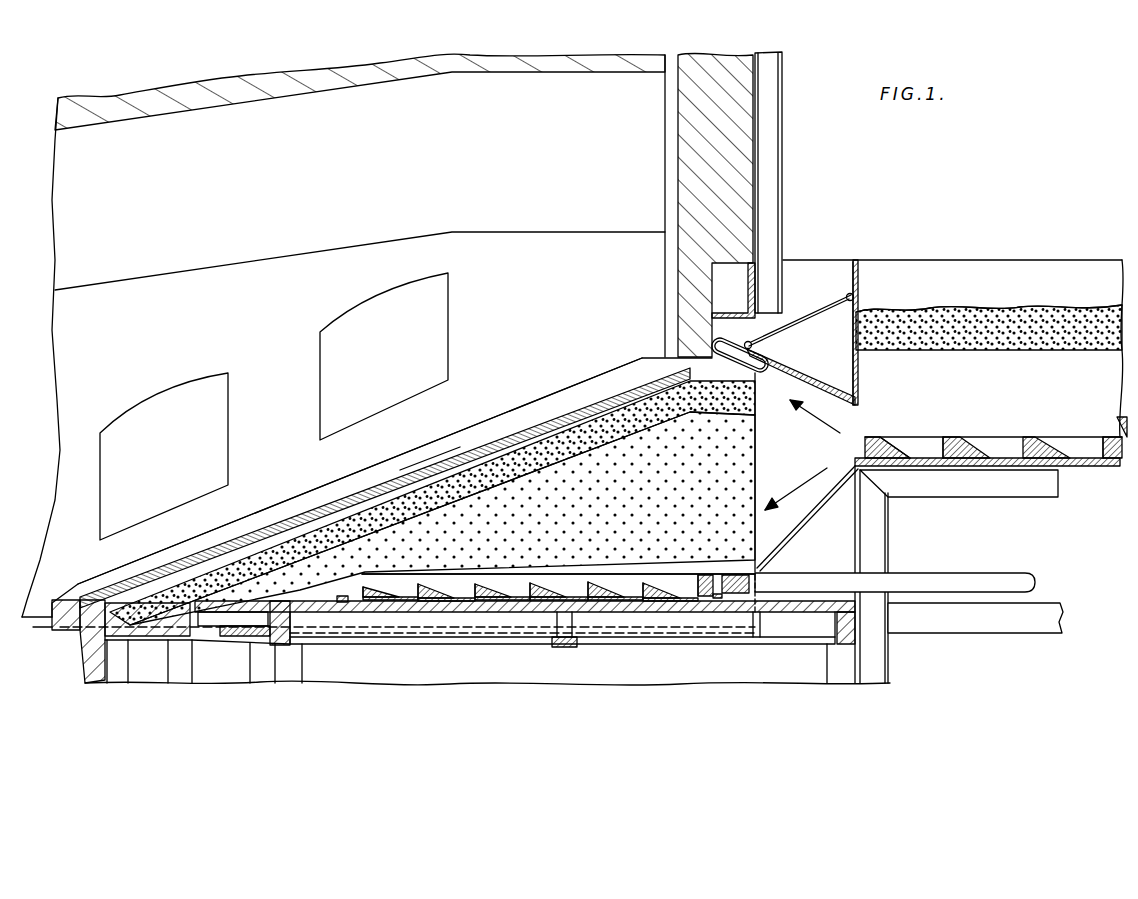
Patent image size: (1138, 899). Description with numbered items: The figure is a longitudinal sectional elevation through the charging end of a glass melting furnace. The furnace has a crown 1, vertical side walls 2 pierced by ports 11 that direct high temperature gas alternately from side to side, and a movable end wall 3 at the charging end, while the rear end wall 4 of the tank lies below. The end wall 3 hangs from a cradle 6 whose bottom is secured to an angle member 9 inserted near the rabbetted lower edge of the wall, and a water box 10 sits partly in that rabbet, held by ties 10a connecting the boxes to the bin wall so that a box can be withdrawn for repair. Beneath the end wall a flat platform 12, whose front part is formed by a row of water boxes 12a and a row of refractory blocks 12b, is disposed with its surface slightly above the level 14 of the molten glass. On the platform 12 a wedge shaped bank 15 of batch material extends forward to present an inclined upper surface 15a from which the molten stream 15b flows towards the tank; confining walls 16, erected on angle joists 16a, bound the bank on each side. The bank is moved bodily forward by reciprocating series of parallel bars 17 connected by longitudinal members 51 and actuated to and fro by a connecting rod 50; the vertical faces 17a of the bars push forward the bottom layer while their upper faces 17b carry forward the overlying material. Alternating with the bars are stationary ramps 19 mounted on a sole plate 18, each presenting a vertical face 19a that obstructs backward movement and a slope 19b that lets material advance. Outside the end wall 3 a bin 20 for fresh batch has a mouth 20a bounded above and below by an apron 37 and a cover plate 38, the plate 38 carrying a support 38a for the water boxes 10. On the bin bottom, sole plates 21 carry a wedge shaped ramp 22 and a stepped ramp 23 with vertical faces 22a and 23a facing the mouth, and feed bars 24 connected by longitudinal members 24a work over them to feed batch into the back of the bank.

The crown 1 is at (217, 96).
The vertical side walls 2 is at (367, 336).
The movable end wall 3 is at (690, 135).
The rear end wall 4 is at (78, 598).
The cradle 6 is at (770, 137).
The angle member 9 is at (733, 319).
The water box 10 is at (758, 356).
The ties 10a is at (845, 296).
The ports 11 is at (274, 406).
The flat platform 12 is at (718, 613).
The water boxes 12a is at (234, 628).
The refractory blocks 12b is at (158, 624).
The level of the molten glass 14 is at (30, 622).
The bank 15 is at (432, 503).
The upper surface 15a is at (495, 452).
The molten stream 15b is at (312, 507).
The confining walls 16 is at (428, 453).
The angle joists 16a is at (617, 630).
The bars 17 is at (369, 586).
The vertical faces 17a is at (362, 588).
The upper faces 17b is at (385, 590).
The sole plate 18 is at (342, 597).
The stationary ramps 19 is at (422, 585).
The vertical face 19a is at (418, 585).
The slope 19b is at (440, 590).
The bin 20 is at (955, 348).
The mouth 20a is at (860, 412).
The sole plates 21 is at (1083, 465).
The ramp 22 is at (963, 445).
The vertical face 22a is at (938, 440).
The ramp 23 is at (1108, 440).
The vertical face 23a is at (1100, 450).
The feed bars 24 is at (878, 437).
The longitudinal members 24a is at (994, 440).
The apron 37 is at (810, 509).
The cover plate 38 is at (838, 393).
The support 38a is at (774, 391).
The connecting rod 50 is at (822, 574).
The longitudinal members 51 is at (447, 580).